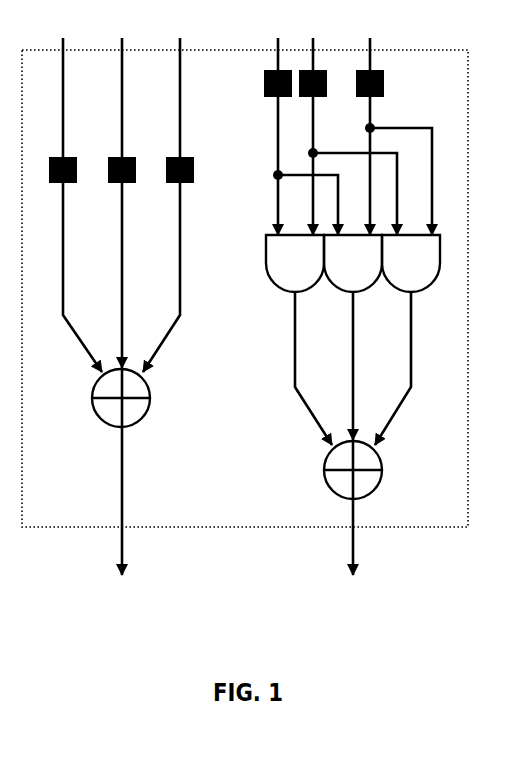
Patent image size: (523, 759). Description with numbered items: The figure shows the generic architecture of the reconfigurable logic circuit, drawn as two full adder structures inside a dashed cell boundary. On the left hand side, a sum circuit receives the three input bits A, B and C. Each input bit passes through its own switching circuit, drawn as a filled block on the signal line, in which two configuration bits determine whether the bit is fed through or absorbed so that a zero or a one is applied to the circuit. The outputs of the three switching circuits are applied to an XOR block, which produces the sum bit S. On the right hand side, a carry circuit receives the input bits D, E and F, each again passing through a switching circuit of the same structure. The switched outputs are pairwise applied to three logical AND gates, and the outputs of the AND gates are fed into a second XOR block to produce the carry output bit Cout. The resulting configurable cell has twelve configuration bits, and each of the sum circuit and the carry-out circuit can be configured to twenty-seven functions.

The input bit A is at (75, 186).
The input bit B is at (122, 184).
The input bit C is at (168, 186).
The input bit D is at (301, 118).
The input bit E is at (348, 118).
The input bit F is at (394, 118).
The sum bit S is at (121, 492).
The carry output bit Cout is at (357, 530).